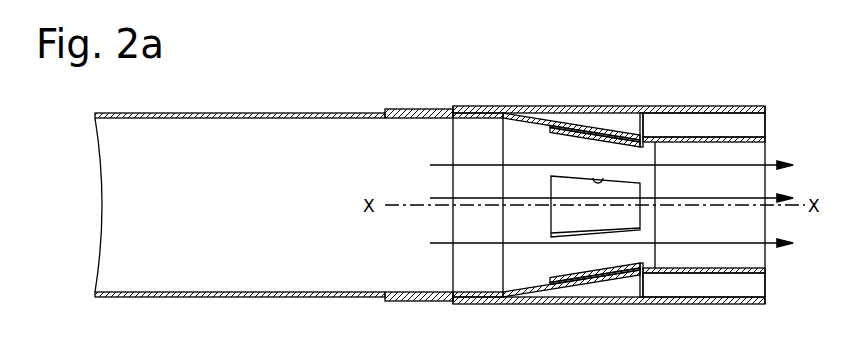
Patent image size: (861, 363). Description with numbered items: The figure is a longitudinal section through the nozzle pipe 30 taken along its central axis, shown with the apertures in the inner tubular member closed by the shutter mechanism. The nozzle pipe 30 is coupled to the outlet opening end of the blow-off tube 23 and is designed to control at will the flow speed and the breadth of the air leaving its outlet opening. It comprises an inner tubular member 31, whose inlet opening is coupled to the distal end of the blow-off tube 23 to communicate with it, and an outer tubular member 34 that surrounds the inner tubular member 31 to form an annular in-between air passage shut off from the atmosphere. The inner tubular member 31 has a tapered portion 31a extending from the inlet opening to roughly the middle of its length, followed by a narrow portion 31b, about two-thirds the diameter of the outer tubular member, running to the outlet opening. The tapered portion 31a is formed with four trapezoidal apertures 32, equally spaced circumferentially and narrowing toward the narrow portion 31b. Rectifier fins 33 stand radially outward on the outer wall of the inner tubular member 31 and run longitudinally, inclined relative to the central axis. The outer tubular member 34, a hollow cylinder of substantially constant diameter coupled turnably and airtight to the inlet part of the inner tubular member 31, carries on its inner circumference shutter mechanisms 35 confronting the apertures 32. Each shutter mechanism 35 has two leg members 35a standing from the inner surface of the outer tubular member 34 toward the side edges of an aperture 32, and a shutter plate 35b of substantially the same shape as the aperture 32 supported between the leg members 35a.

The blow-off tube 23 is at (225, 113).
The nozzle pipe 30 is at (670, 104).
The inner tubular member 31 is at (616, 181).
The tapered portion 31a is at (540, 114).
The narrow portion 31b is at (753, 137).
The aperture 32 is at (598, 176).
The rectifier fin 33 is at (725, 122).
The outer tubular member 34 is at (693, 108).
The shutter mechanism 35 is at (569, 193).
The leg member 35a is at (558, 118).
The shutter plate 35b is at (582, 126).